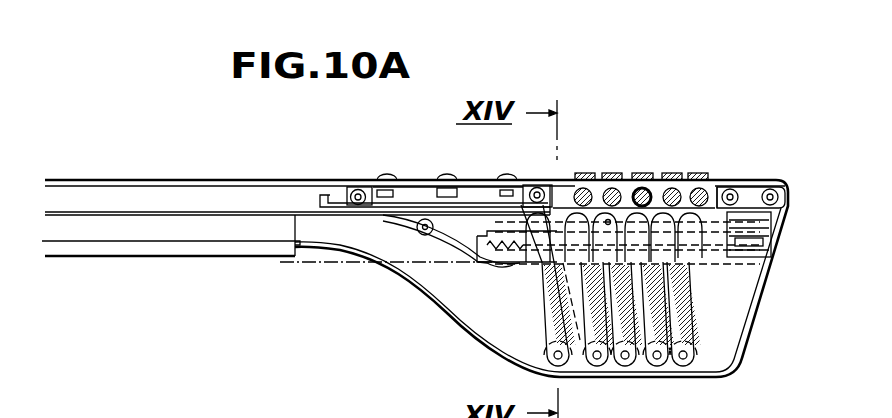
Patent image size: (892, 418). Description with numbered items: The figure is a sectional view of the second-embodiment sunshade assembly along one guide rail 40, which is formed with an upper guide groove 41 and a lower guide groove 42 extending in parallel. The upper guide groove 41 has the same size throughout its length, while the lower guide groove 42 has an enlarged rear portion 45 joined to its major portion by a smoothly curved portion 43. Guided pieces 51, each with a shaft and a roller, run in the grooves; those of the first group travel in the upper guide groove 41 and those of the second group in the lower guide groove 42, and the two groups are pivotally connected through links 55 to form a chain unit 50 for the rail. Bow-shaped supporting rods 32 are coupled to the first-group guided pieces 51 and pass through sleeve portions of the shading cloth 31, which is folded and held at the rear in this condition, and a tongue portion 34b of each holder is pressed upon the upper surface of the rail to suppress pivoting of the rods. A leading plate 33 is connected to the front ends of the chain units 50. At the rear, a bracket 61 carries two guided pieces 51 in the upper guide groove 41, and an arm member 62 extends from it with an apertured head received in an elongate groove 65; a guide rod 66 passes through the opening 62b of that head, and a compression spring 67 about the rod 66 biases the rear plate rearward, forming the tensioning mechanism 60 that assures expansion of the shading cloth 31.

The guide rail 40 is at (278, 178).
The upper guide groove 41 is at (162, 195).
The lower guide groove 42 is at (168, 227).
The smoothly curved portion 43 is at (447, 312).
The chain unit 50 is at (540, 310).
The guided piece 51 is at (360, 187).
The supporting rod 32 is at (612, 187).
The leading plate 33 is at (476, 207).
The tongue portion 34b is at (693, 175).
The bracket 61 is at (748, 187).
The guide rod 66 is at (770, 237).
The elongate groove 65 is at (500, 258).
The compression spring 67 is at (513, 263).
The link 55 is at (687, 318).
The shading cloth 31 is at (693, 297).
The arm member 62 is at (785, 250).
The opening 62b is at (763, 298).
The tensioning mechanism 60 is at (715, 278).
The enlarged rear portion 45 is at (719, 343).